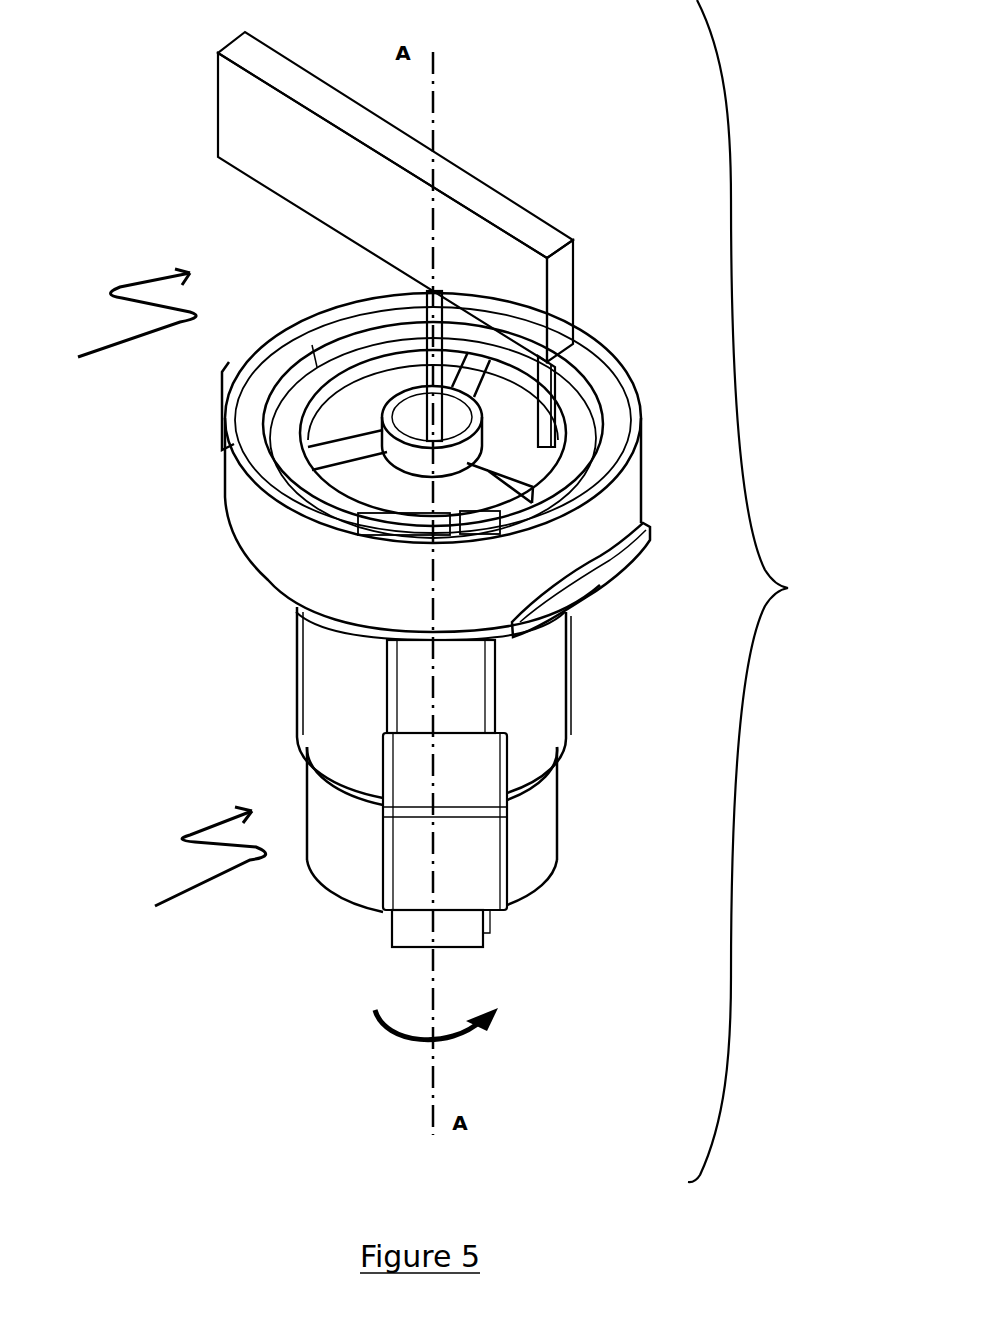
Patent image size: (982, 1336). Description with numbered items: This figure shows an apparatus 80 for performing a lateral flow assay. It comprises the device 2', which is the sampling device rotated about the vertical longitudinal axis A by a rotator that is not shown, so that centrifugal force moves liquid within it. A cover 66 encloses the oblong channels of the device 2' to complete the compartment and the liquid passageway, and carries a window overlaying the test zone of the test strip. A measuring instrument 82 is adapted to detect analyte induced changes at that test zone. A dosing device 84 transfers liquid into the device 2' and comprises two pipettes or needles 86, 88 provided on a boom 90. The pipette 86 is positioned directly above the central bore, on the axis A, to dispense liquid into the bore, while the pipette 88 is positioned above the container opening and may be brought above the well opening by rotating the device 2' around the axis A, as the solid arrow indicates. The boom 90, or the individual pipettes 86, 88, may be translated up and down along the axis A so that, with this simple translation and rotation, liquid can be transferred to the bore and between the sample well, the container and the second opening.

The device 2' is at (193, 863).
The cover 66 is at (467, 680).
The apparatus 80 is at (529, 591).
The measuring instrument 82 is at (465, 857).
The dosing device 84 is at (114, 324).
The pipette 86 is at (425, 336).
The pipette 88 is at (550, 400).
The boom 90 is at (304, 182).